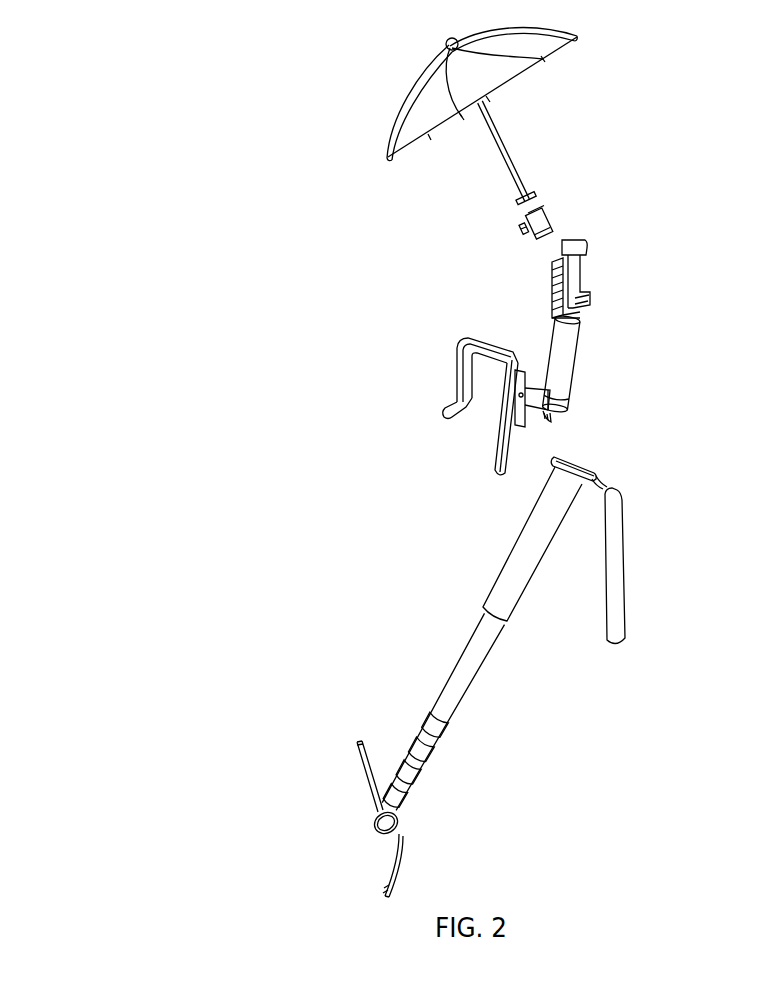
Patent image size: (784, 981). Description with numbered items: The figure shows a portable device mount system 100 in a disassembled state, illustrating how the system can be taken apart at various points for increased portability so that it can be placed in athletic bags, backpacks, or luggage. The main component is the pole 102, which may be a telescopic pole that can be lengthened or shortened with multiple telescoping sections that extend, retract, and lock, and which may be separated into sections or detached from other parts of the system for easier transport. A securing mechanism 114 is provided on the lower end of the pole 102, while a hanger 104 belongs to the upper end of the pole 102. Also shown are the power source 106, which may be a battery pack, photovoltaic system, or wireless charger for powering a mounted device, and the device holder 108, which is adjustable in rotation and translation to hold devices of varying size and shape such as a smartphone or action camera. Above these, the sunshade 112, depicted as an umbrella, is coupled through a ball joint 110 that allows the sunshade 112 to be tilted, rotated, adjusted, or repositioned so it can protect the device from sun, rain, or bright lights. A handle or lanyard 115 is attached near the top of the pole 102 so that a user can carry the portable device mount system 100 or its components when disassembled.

The portable device mount system 100 is at (225, 125).
The pole 102 is at (513, 643).
The hanger 104 is at (445, 390).
The power source 106 is at (588, 358).
The device holder 108 is at (587, 267).
The ball joint 110 is at (515, 215).
The sunshade 112 is at (565, 62).
The securing mechanism 114 is at (405, 835).
The handle or lanyard 115 is at (640, 538).